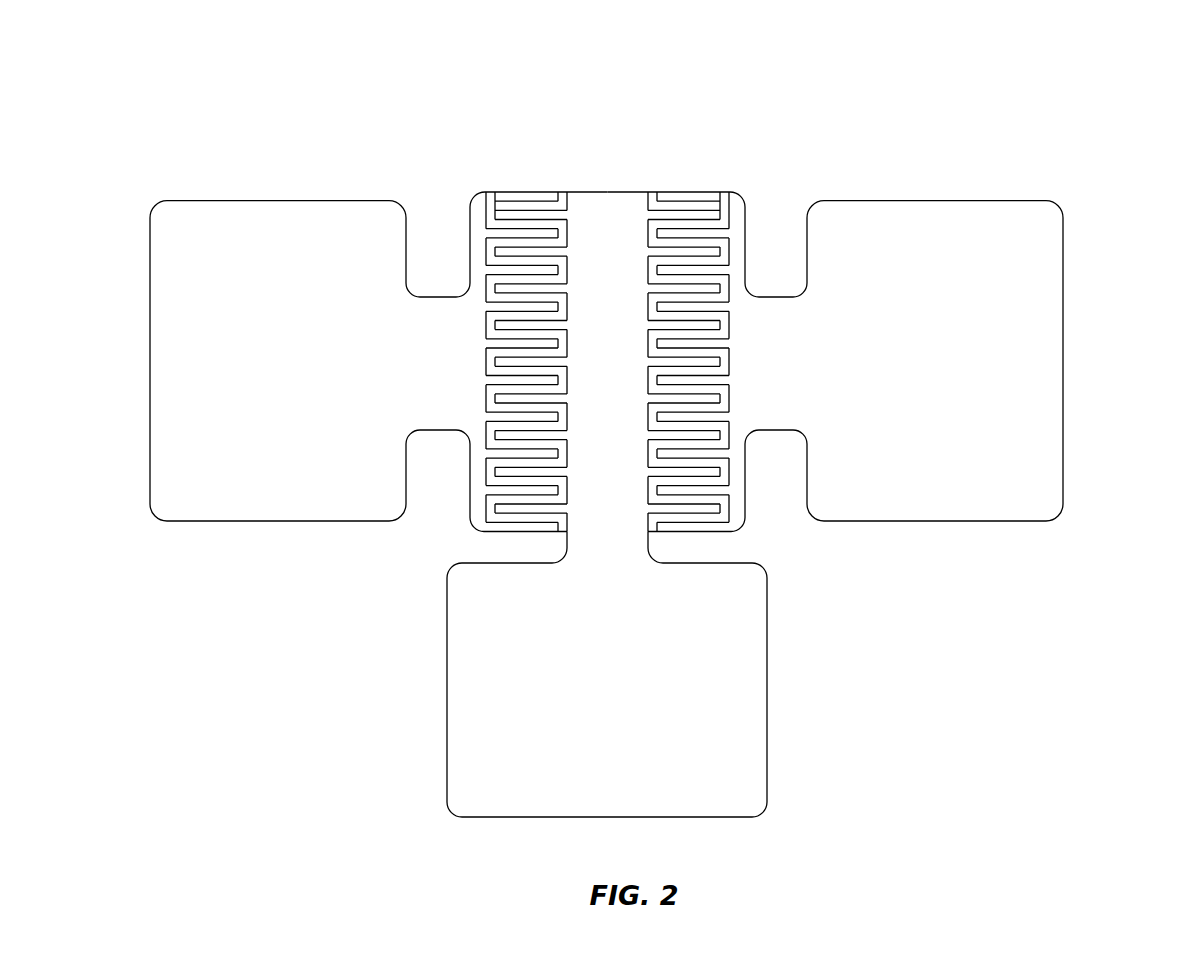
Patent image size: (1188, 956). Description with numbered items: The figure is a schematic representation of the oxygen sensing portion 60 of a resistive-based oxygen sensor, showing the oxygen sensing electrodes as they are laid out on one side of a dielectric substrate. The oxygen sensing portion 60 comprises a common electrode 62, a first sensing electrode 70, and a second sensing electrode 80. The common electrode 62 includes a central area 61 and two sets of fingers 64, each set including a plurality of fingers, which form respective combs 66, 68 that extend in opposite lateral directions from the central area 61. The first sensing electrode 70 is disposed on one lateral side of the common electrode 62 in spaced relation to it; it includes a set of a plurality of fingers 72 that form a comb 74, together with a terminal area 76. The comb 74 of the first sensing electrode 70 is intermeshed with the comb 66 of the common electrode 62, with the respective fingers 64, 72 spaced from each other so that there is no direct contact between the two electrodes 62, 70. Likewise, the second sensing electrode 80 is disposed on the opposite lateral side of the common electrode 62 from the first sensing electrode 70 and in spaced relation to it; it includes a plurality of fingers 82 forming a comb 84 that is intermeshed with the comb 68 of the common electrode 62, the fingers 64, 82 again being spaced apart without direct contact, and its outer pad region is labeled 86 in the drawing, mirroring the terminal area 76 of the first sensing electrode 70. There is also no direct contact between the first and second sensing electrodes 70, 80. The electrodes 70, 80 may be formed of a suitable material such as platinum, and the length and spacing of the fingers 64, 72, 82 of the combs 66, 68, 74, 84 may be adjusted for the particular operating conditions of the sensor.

The oxygen sensing portion 60 is at (273, 90).
The central area 61 is at (612, 528).
The common electrode 62 is at (722, 720).
The fingers 64 is at (617, 364).
The comb 66 is at (538, 186).
The comb 68 is at (675, 186).
The first sensing electrode 70 is at (150, 300).
The fingers 72 is at (527, 236).
The comb 74 is at (515, 177).
The terminal area 76 is at (281, 232).
The second sensing electrode 80 is at (1063, 293).
The fingers 82 is at (680, 250).
The comb 84 is at (698, 178).
The right pad surface 86 is at (960, 226).